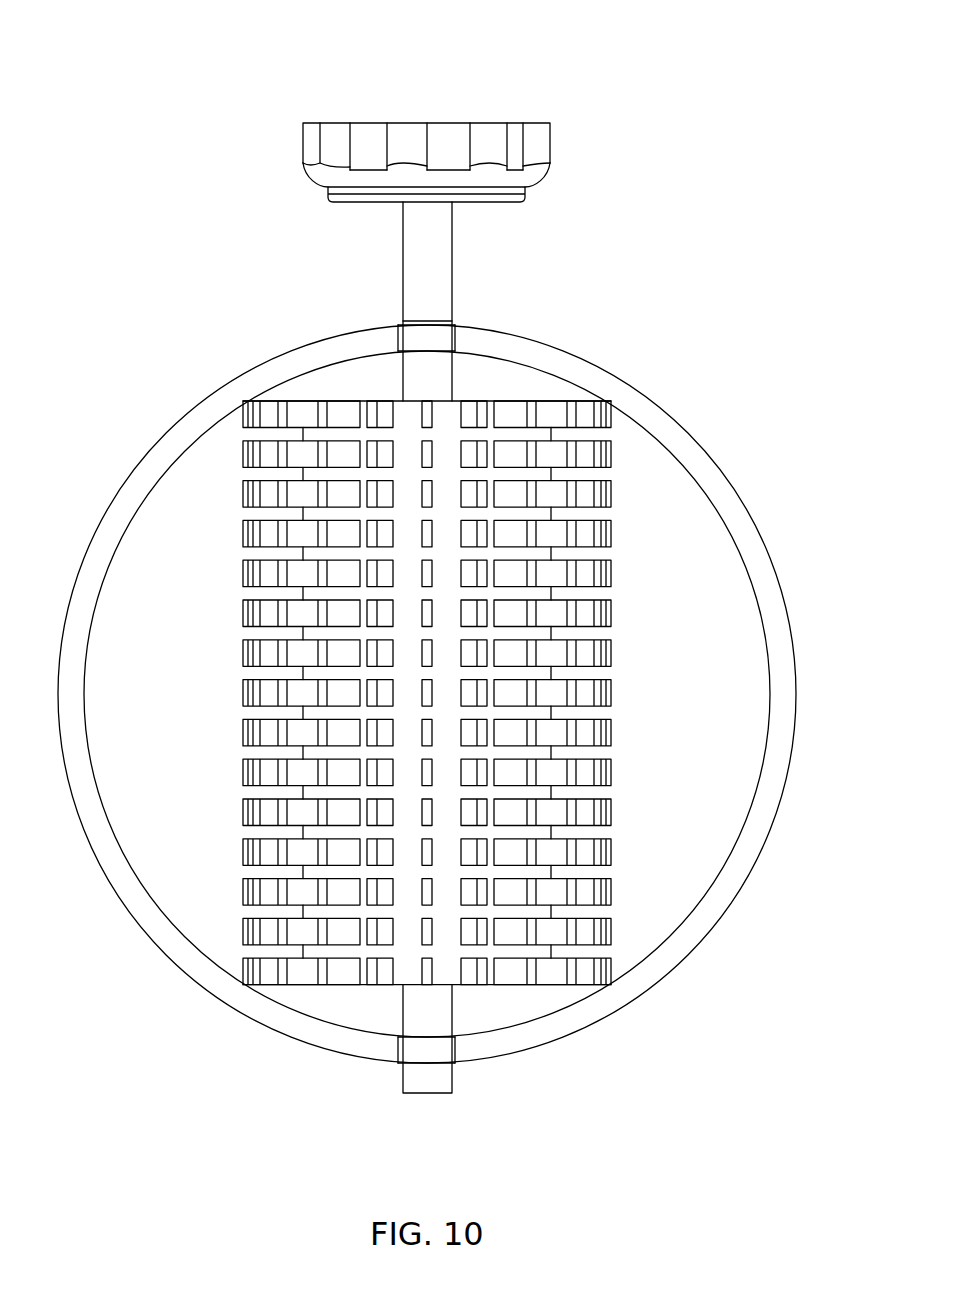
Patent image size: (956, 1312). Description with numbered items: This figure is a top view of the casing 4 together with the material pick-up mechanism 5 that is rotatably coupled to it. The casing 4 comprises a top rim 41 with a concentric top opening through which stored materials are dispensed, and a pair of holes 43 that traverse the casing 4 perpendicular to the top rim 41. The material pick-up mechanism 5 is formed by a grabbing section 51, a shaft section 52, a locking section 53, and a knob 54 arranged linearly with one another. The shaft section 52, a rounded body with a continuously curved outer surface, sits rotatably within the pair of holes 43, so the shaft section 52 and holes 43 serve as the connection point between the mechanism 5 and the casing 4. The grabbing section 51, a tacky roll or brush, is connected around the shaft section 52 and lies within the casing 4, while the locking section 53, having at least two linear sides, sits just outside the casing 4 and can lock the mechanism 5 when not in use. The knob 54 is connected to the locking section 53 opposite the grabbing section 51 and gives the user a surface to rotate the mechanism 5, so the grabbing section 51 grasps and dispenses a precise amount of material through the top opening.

The casing 4 is at (427, 707).
The top rim 41 is at (700, 922).
The pair of holes 43 is at (455, 340).
The material pick-up mechanism 5 is at (325, 110).
The grabbing section 51 is at (584, 618).
The shaft section 52 is at (425, 345).
The locking section 53 is at (440, 236).
The knob 54 is at (448, 133).